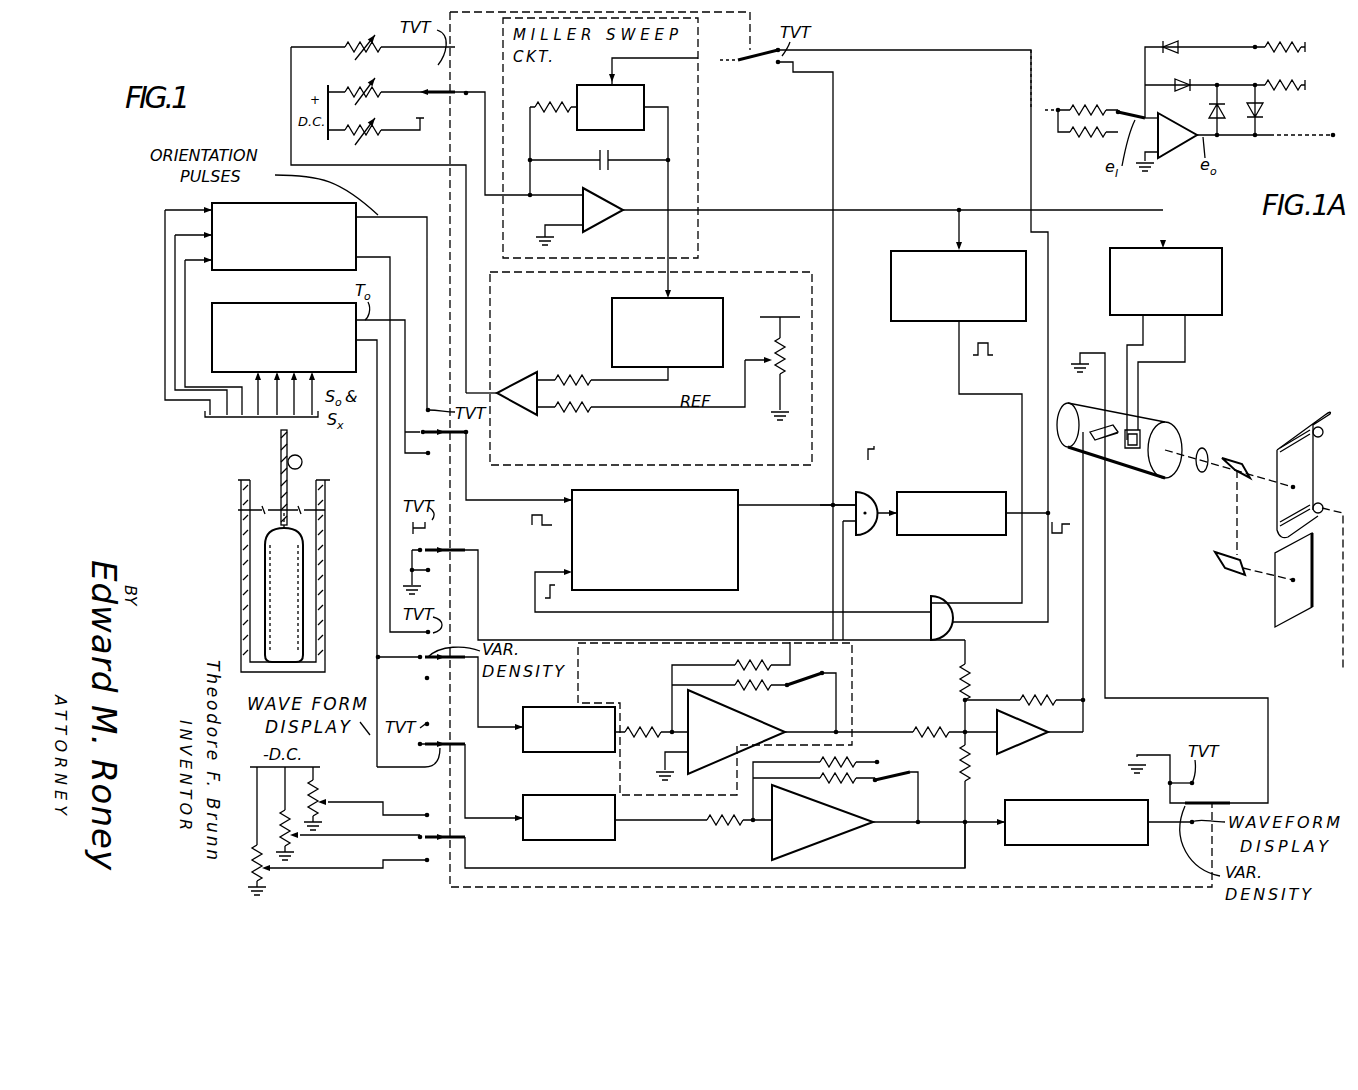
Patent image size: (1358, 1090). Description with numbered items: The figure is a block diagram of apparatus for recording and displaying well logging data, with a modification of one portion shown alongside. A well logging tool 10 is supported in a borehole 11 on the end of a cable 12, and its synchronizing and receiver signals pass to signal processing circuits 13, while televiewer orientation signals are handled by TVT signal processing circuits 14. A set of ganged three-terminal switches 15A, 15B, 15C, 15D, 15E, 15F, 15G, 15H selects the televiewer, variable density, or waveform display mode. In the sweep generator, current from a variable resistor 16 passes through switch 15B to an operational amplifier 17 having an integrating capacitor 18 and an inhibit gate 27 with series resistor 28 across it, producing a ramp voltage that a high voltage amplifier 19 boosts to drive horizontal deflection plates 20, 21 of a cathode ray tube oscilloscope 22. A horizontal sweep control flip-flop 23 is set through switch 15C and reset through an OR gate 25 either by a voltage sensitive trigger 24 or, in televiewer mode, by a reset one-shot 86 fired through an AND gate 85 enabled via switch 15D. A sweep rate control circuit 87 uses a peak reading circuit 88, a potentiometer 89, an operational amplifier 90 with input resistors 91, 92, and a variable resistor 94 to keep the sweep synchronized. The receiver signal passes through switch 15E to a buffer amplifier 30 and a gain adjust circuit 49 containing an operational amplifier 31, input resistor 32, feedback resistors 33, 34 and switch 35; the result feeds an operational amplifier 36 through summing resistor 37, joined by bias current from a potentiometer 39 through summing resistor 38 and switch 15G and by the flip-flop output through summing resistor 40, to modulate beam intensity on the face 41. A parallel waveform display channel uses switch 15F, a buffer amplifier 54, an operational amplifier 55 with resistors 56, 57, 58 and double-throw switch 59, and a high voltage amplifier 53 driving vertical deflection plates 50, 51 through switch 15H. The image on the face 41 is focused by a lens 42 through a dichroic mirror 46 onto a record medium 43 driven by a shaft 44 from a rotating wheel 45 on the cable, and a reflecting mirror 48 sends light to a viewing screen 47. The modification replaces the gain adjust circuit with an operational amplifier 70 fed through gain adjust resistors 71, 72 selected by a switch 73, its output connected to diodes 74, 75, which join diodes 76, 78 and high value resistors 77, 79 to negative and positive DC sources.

In FIG. 1, the well logging tool 10 is at (265, 569).
In FIG. 1, the borehole 11 is at (250, 530).
In FIG. 1, the cable 12 is at (280, 452).
In FIG. 1, the signal processing circuits 13 is at (255, 305).
In FIG. 1, the TVT signal processing circuits 14 is at (215, 205).
In FIG. 1, the switch 15A is at (745, 62).
In FIG. 1, the switch 15B is at (466, 92).
In FIG. 1, the switch 15C is at (438, 440).
In FIG. 1, the switch 15D is at (452, 551).
In FIG. 1, the switch 15E is at (432, 665).
In FIG. 1, the switch 15F is at (440, 756).
In FIG. 1, the switch 15G is at (436, 852).
In FIG. 1, the switch 15H is at (1215, 802).
In FIG. 1, the variable resistor 16 is at (384, 85).
In FIG. 1, the operational amplifier 17 is at (609, 206).
In FIG. 1, the integrating capacitor 18 is at (609, 158).
In FIG. 1, the high voltage amplifier 19 is at (1205, 250).
In FIG. 1, the horizontal deflection plate 20 is at (1140, 440).
In FIG. 1, the horizontal deflection plate 21 is at (1140, 450).
In FIG. 1, the cathode ray tube oscilloscope 22 is at (1066, 445).
In FIG. 1, the horizontal sweep control flip-flop 23 is at (738, 554).
In FIG. 1, the voltage sensitive trigger 24 is at (908, 322).
In FIG. 1, the OR gate 25 is at (936, 597).
In FIG. 1, the inhibit gate 27 is at (644, 102).
In FIG. 1, the series resistor 28 is at (553, 135).
In FIG. 1, the buffer amplifier 30 is at (548, 753).
In FIG. 1, the operational amplifier 31 is at (710, 772).
In FIG. 1, the input resistor 32 is at (651, 750).
In FIG. 1, the feedback resistor 33 is at (731, 687).
In FIG. 1, the feedback resistor 34 is at (733, 696).
In FIG. 1, the switch 35 is at (806, 678).
In FIG. 1, the operational amplifier 36 is at (1030, 745).
In FIG. 1, the input summing resistor 37 is at (918, 732).
In FIG. 1, the summing resistor 38 is at (968, 780).
In FIG. 1, the potentiometer 39 is at (298, 838).
In FIG. 1, the summing resistor 40 is at (968, 666).
In FIG. 1, the face 41 is at (1183, 440).
In FIG. 1, the lens 42 is at (1208, 460).
In FIG. 1, the record medium 43 is at (1300, 430).
In FIG. 1, the shaft 44 is at (1343, 665).
In FIG. 1, the rotating wheel 45 is at (302, 461).
In FIG. 1, the dichroic mirror 46 is at (1232, 471).
In FIG. 1, the viewing screen 47 is at (1275, 616).
In FIG. 1, the reflecting mirror 48 is at (1222, 563).
In FIG. 1, the gain adjust circuit 49 is at (852, 682).
In FIG. 1, the vertical deflection plate 50 is at (1098, 425).
In FIG. 1, the vertical deflection plate 51 is at (1105, 445).
In FIG. 1, the high voltage amplifier 53 is at (1088, 846).
In FIG. 1, the buffer amplifier 54 is at (566, 796).
In FIG. 1, the operational amplifier 55 is at (840, 836).
In FIG. 1, the resistor 56 is at (728, 838).
In FIG. 1, the resistor 57 is at (846, 763).
In FIG. 1, the resistor 58 is at (848, 782).
In FIG. 1, the double-throw switch 59 is at (890, 779).
In FIG. 1A, the operational amplifier 70 is at (1175, 159).
In FIG. 1A, the gain adjust resistor 71 is at (1083, 108).
In FIG. 1A, the gain adjust resistor 72 is at (1084, 135).
In FIG. 1A, the switch 73 is at (1118, 110).
In FIG. 1A, the diode 74 is at (1222, 122).
In FIG. 1A, the diode 75 is at (1262, 117).
In FIG. 1A, the diode 76 is at (1183, 80).
In FIG. 1A, the high value resistor 77 is at (1282, 93).
In FIG. 1A, the diode 78 is at (1165, 42).
In FIG. 1A, the high value resistor 79 is at (1280, 45).
In FIG. 1, the AND gate 85 is at (868, 538).
In FIG. 1, the reset one-shot 86 is at (935, 492).
In FIG. 1, the sweep rate control circuit 87 is at (725, 275).
In FIG. 1, the peak reading circuit 88 is at (612, 300).
In FIG. 1, the potentiometer 89 is at (770, 356).
In FIG. 1, the operational amplifier 90 is at (520, 373).
In FIG. 1, the input resistor 91 is at (570, 378).
In FIG. 1, the input resistor 92 is at (592, 407).
In FIG. 1, the variable resistor 94 is at (375, 141).